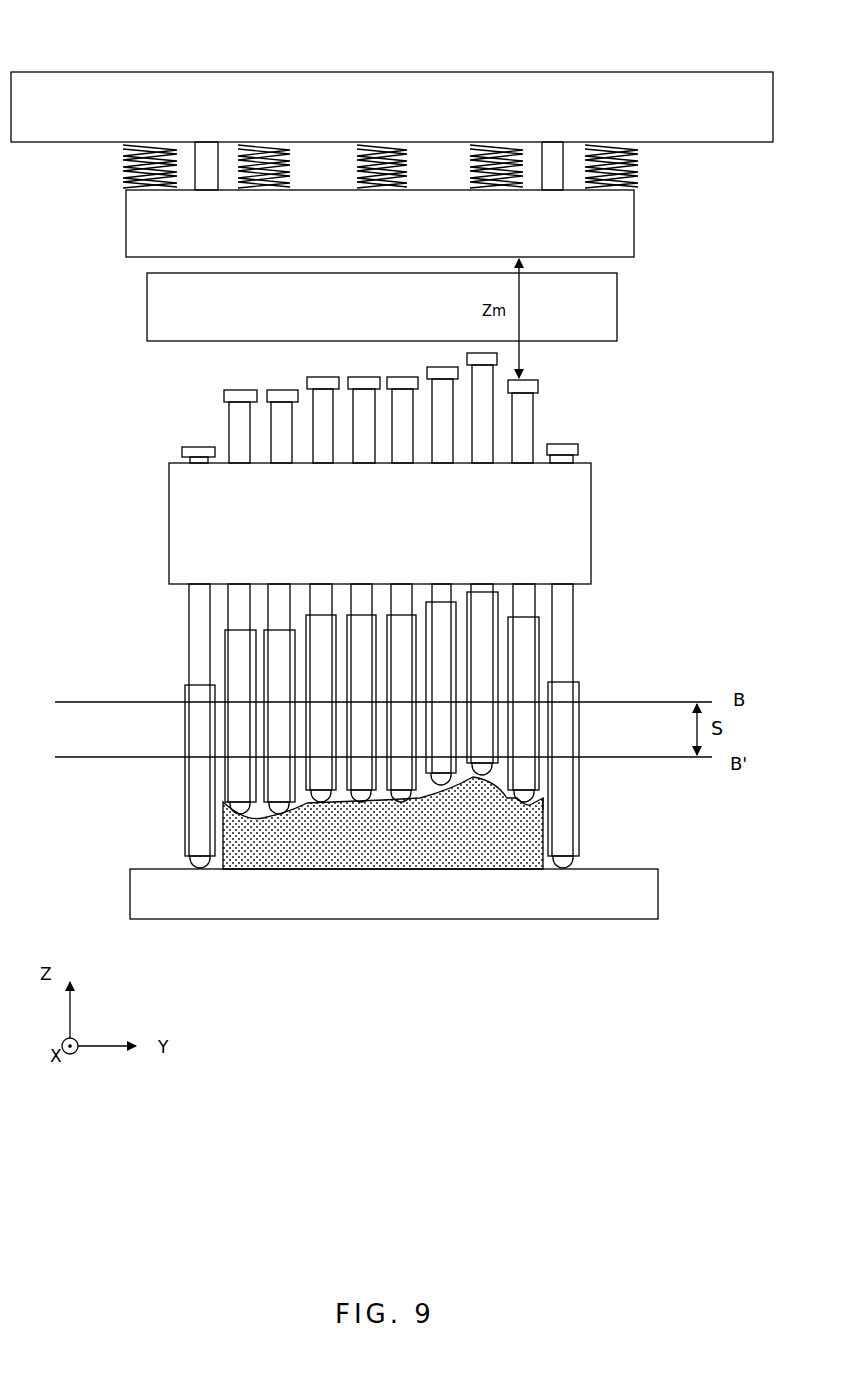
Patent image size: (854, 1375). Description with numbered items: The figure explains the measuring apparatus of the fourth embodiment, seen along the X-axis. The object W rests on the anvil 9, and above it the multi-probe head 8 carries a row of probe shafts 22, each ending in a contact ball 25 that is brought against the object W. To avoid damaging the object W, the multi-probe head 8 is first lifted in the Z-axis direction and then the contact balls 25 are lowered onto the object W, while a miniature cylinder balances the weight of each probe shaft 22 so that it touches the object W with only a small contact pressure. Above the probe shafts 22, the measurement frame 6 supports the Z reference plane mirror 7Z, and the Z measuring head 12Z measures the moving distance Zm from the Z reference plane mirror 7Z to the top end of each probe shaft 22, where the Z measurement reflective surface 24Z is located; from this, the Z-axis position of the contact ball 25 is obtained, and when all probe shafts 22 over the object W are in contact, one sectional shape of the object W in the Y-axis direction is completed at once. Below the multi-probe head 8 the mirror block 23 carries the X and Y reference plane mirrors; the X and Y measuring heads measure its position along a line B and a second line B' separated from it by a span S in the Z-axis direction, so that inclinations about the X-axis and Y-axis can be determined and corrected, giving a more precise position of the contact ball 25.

The measurement frame 6 is at (497, 92).
The Z reference plane mirror 7Z is at (610, 223).
The Z measuring head 12Z is at (587, 325).
The Z measurement reflective surface 24Z is at (523, 377).
The probe shaft 22 is at (527, 417).
The multi-probe head 8 is at (565, 493).
The mirror block 23 is at (527, 660).
The contact ball 25 is at (545, 797).
The object W is at (238, 842).
The anvil 9 is at (238, 898).